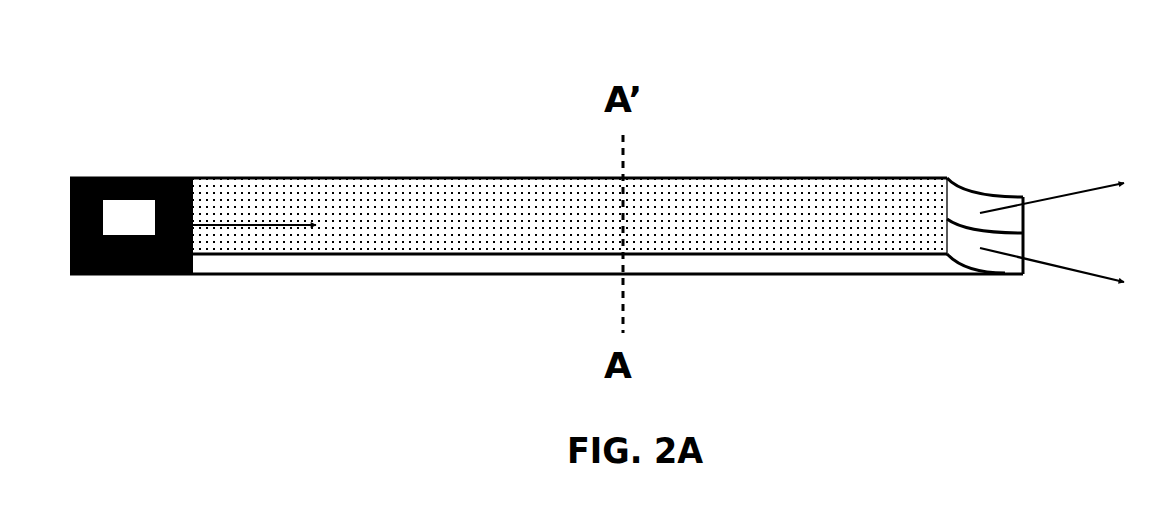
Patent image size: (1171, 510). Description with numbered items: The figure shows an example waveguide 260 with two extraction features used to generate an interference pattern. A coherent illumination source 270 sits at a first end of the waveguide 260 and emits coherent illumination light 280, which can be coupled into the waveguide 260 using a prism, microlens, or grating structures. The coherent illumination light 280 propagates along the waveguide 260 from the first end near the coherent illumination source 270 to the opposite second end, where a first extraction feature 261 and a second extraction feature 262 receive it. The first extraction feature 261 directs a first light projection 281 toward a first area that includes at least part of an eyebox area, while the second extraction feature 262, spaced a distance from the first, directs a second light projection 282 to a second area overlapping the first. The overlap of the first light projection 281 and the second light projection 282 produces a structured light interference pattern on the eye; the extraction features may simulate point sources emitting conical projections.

The waveguide 260 is at (558, 175).
The first extraction feature 261 is at (962, 203).
The second extraction feature 262 is at (968, 247).
The coherent illumination source 270 is at (131, 226).
The coherent illumination light 280 is at (297, 224).
The first light projection 281 is at (1073, 185).
The second light projection 282 is at (1082, 273).